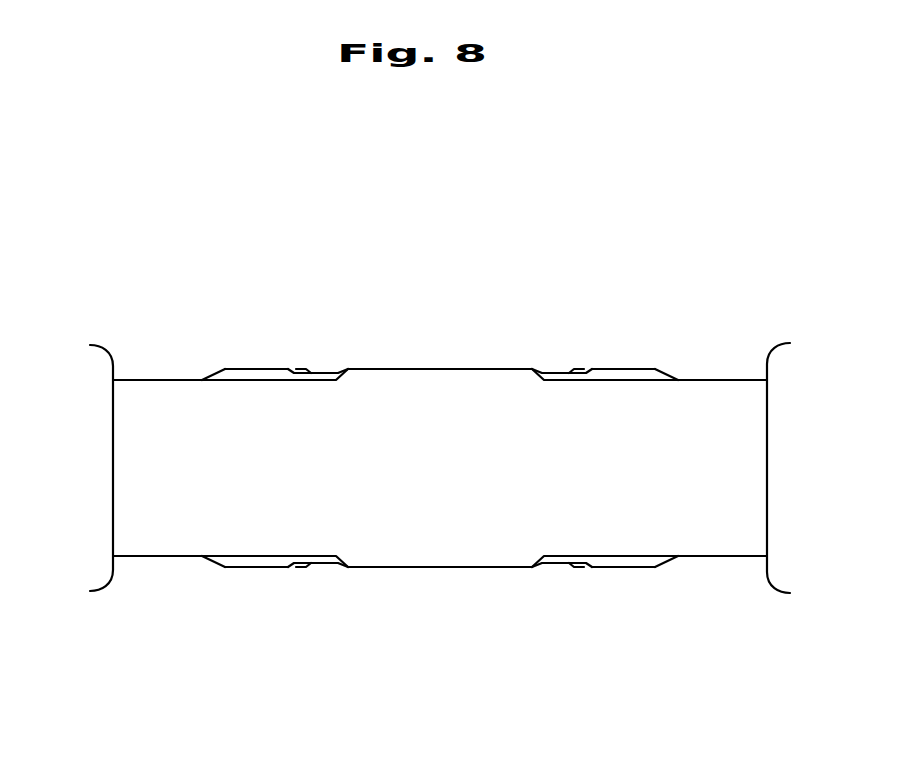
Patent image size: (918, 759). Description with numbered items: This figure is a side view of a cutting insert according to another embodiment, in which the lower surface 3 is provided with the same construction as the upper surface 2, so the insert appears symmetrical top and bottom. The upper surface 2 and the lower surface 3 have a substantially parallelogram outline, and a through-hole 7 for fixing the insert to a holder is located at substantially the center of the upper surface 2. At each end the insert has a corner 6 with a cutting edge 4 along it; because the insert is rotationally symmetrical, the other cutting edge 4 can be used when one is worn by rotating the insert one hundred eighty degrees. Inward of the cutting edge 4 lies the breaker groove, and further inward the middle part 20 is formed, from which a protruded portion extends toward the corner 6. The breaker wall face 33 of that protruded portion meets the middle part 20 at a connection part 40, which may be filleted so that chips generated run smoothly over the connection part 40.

The upper surface 2 is at (727, 380).
The lower surface 3 is at (159, 556).
The cutting edge 4 is at (440, 470).
The corner 6 is at (440, 470).
The through-hole 7 is at (440, 369).
The middle part 20 is at (269, 358).
The breaker wall face 33 is at (212, 374).
The connection part 40 is at (224, 369).